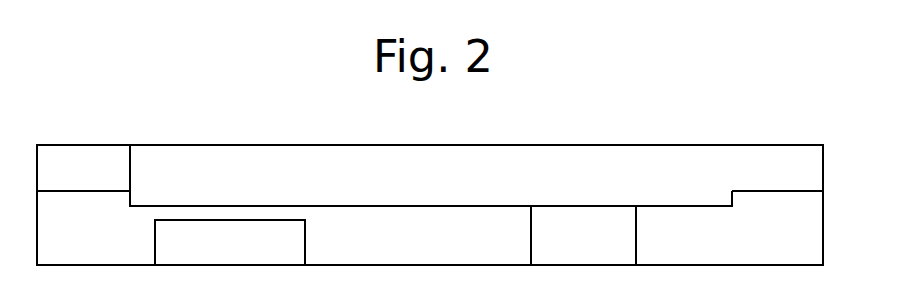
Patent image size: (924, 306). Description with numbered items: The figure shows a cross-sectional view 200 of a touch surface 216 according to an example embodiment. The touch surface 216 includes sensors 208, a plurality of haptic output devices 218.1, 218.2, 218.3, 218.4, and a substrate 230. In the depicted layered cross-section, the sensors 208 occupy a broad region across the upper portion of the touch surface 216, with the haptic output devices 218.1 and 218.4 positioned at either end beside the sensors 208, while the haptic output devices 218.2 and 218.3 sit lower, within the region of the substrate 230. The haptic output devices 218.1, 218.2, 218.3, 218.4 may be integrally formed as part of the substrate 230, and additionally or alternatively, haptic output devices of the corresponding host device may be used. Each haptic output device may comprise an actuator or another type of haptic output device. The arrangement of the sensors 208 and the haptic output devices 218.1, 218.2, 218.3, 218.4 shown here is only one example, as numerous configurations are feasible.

The cross-sectional view 200 is at (452, 110).
The touch surface 216 is at (823, 207).
The sensors 208 is at (431, 175).
The haptic output device 218.1 is at (83, 174).
The haptic output device 218.2 is at (230, 242).
The haptic output device 218.3 is at (583, 235).
The haptic output device 218.4 is at (777, 174).
The substrate 230 is at (92, 256).